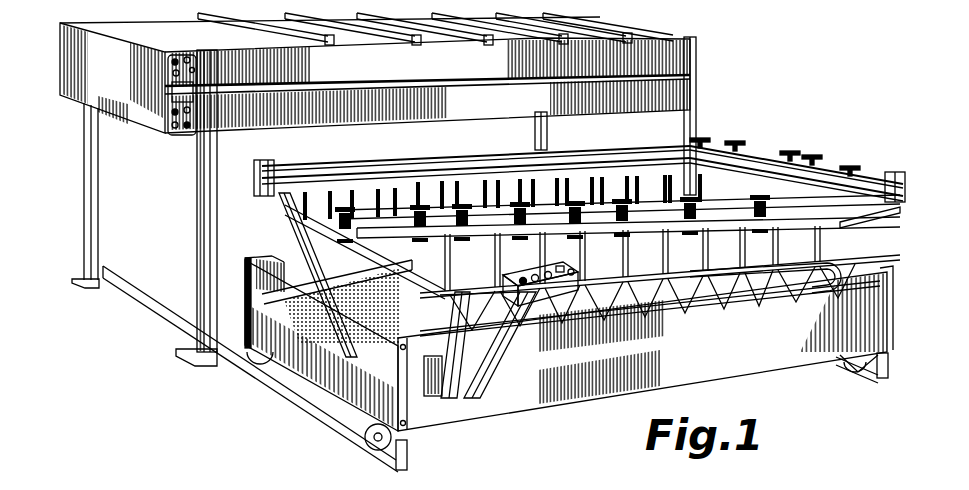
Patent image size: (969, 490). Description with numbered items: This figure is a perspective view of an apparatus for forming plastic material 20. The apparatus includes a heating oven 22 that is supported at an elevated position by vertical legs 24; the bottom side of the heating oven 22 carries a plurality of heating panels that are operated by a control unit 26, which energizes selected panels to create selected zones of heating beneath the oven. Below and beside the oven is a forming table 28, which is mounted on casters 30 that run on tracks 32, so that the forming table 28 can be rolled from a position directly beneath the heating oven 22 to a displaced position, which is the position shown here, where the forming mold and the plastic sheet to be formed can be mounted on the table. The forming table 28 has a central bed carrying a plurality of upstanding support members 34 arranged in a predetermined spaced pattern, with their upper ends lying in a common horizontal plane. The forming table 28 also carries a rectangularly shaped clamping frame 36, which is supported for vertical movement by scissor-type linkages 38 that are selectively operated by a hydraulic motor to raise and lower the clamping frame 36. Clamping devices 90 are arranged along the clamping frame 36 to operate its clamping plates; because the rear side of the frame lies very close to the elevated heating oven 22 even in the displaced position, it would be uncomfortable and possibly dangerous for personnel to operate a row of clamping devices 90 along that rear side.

The apparatus for forming plastic material 20 is at (726, 98).
The heating oven 22 is at (672, 52).
The vertical legs 24 is at (197, 203).
The control unit 26 is at (173, 131).
The forming table 28 is at (495, 410).
The casters 30 is at (373, 446).
The tracks 32 is at (287, 402).
The support members 34 is at (462, 195).
The clamping frame 36 is at (386, 164).
The scissor-type linkages 38 is at (290, 247).
The clamping devices 90 is at (729, 143).